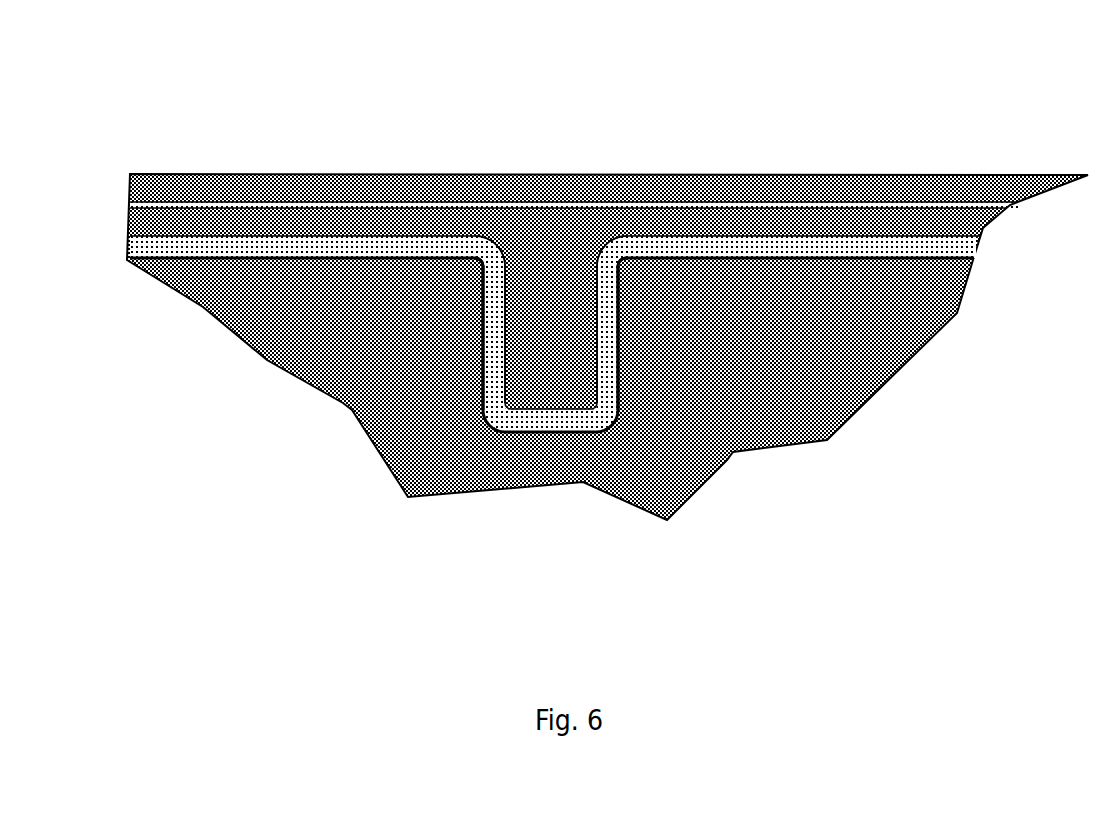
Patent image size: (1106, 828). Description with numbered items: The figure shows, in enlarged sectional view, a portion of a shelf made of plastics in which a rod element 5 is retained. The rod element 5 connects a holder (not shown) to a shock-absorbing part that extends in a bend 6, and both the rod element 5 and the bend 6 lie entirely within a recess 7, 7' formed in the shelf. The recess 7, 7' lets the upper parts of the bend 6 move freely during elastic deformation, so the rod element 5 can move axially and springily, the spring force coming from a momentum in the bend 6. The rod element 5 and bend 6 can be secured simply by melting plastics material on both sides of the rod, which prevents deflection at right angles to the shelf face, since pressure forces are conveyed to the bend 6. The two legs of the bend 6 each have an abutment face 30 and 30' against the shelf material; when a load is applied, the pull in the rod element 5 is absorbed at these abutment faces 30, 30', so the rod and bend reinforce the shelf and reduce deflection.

The rod element 5 is at (343, 242).
The bend 6 is at (612, 372).
The recess 7 is at (549, 237).
The recess 7' is at (655, 237).
The abutment face 30 is at (647, 286).
The abutment face 30' is at (426, 297).